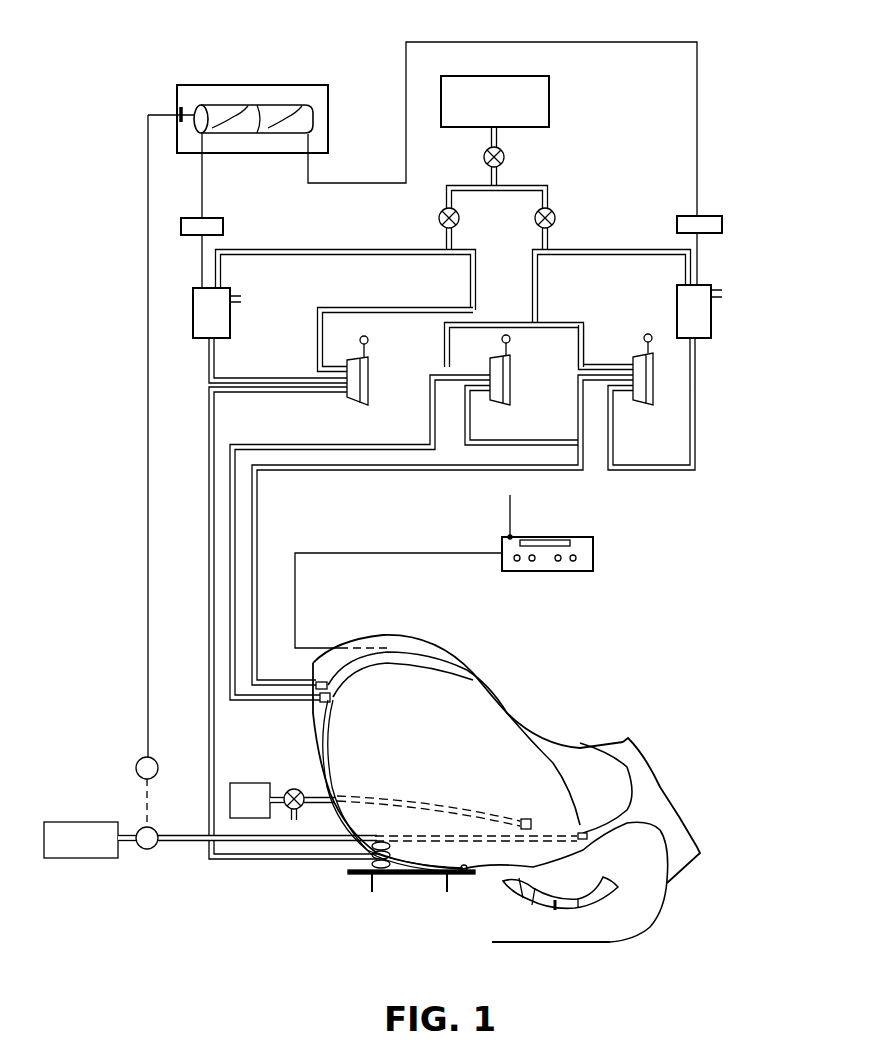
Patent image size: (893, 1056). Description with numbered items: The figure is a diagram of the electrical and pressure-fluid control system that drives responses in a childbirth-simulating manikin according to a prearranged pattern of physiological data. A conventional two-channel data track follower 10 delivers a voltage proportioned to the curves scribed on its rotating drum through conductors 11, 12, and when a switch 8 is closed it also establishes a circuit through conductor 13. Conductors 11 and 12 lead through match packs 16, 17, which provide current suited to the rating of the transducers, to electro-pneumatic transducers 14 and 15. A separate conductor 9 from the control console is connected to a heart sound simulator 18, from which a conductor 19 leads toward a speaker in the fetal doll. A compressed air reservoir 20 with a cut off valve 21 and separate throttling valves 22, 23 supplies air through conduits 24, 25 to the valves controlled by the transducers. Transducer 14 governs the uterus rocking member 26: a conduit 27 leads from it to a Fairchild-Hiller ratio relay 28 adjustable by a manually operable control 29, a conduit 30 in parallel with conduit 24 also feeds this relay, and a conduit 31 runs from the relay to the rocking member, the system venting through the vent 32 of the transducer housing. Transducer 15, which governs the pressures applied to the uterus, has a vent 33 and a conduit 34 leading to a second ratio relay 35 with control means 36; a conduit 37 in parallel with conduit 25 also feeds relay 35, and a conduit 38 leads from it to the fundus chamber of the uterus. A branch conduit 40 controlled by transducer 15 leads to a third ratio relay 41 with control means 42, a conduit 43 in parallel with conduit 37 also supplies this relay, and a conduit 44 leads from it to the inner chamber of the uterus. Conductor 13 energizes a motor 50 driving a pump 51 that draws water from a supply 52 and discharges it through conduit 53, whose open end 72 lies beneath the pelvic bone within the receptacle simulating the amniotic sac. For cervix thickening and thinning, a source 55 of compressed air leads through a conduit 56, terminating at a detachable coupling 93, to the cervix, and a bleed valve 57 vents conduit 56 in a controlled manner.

The switch 8 is at (179, 112).
The conductor 9 is at (512, 512).
The two-channel data track follower 10 is at (276, 85).
The conductor 11 is at (200, 192).
The conductor 12 is at (490, 42).
The conductor 13 is at (146, 320).
The electro-pneumatic transducer 14 is at (230, 323).
The electro-pneumatic transducer 15 is at (711, 323).
The match pack 16 is at (220, 218).
The match pack 17 is at (712, 218).
The heart sound simulator 18 is at (594, 552).
The conductor 19 is at (345, 552).
The compressed air reservoir 20 is at (540, 106).
The cut off valve 21 is at (504, 162).
The throttling valve 22 is at (443, 210).
The throttling valve 23 is at (551, 211).
The conduit 24 is at (286, 250).
The conduit 25 is at (576, 250).
The uterus rocking member 26 is at (424, 875).
The conduit 27 is at (209, 360).
The ratio relay 28 is at (370, 380).
The manually operable control 29 is at (368, 340).
The conduit 30 is at (470, 288).
The conduit 31 is at (259, 390).
The vent 32 is at (237, 296).
The vent 33 is at (718, 292).
The conduit 34 is at (650, 468).
The second ratio relay 35 is at (633, 357).
The control means 36 is at (650, 333).
The conduit 37 is at (583, 327).
The conduit 38 is at (370, 468).
The branch conduit 40 is at (521, 440).
The third ratio relay 41 is at (510, 385).
The control means 42 is at (512, 340).
The conduit 43 is at (507, 323).
The conduit 44 is at (342, 446).
The motor 50 is at (157, 762).
The pump 51 is at (150, 849).
The water supply 52 is at (98, 822).
The conduit 53 is at (196, 848).
The source of compressed air 55 is at (248, 786).
The conduit 56 is at (430, 798).
The bleed valve 57 is at (291, 788).
The open end of water supply line 72 is at (584, 832).
The detachable coupling 93 is at (527, 818).